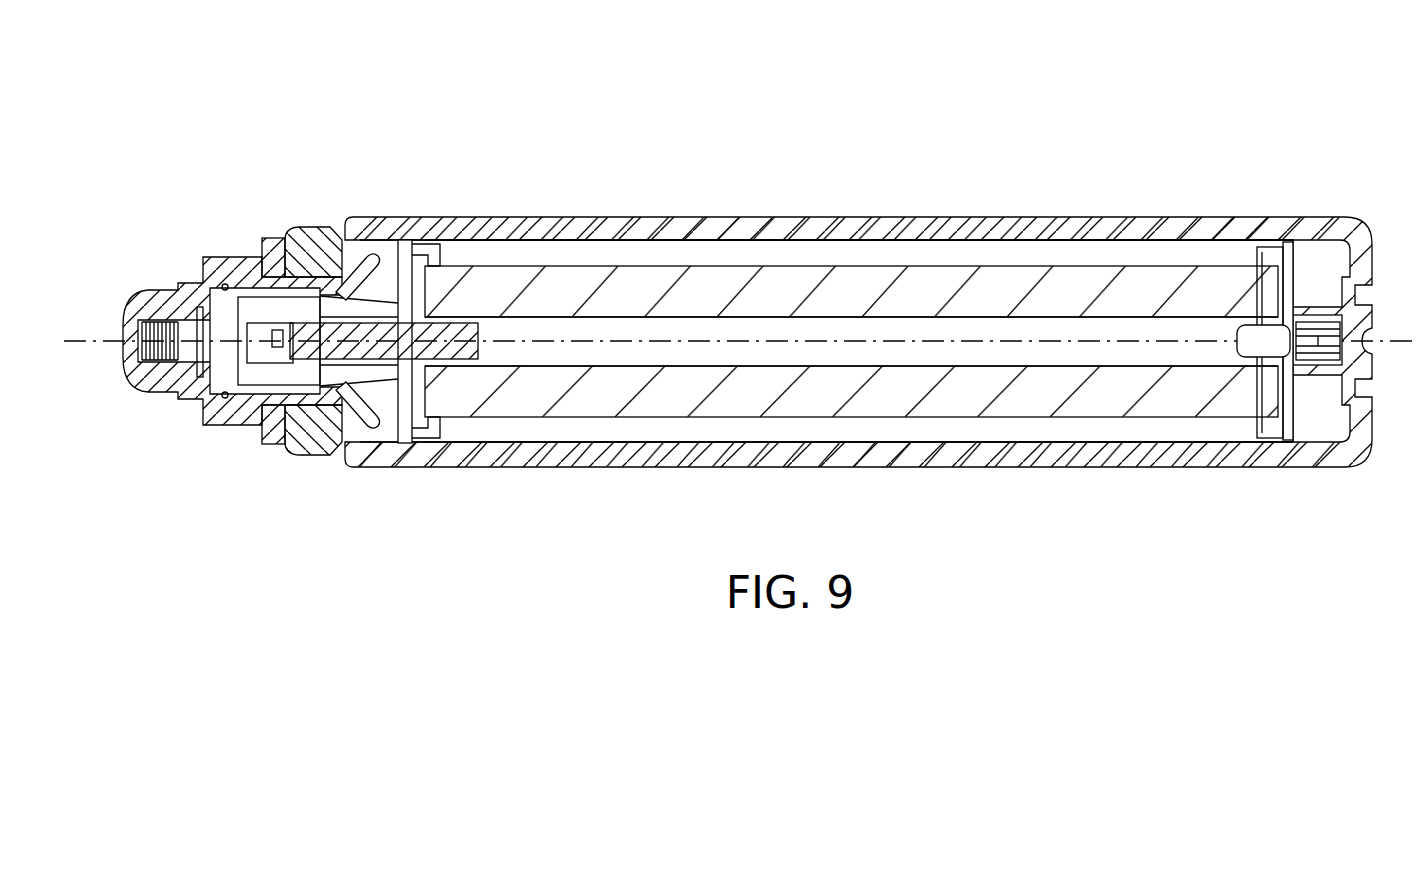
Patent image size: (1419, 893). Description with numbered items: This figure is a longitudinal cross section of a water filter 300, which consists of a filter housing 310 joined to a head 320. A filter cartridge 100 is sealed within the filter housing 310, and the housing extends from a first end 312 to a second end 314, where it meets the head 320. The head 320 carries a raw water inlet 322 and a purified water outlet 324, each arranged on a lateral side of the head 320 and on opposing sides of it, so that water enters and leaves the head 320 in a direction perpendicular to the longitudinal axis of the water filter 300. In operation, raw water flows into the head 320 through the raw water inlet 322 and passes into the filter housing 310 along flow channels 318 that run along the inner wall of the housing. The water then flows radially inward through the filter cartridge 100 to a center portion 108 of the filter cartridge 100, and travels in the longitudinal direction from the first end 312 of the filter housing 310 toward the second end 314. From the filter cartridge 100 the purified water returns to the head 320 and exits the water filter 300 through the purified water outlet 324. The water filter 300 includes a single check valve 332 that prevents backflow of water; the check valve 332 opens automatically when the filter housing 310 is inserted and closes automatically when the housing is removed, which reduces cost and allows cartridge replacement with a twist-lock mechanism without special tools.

The water filter 300 is at (741, 271).
The filter housing 310 is at (800, 218).
The first end 312 is at (1350, 230).
The second end 314 is at (380, 225).
The flow channels 318 is at (1069, 248).
The head 320 is at (208, 257).
The raw water inlet 322 is at (273, 444).
The purified water outlet 324 is at (276, 238).
The check valve 332 is at (160, 355).
The filter cartridge 100 is at (950, 275).
The center portion 108 is at (884, 327).